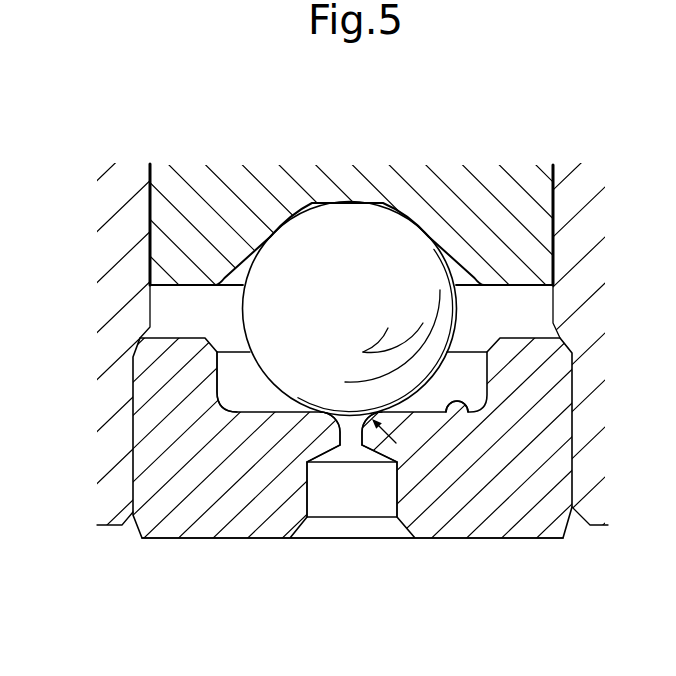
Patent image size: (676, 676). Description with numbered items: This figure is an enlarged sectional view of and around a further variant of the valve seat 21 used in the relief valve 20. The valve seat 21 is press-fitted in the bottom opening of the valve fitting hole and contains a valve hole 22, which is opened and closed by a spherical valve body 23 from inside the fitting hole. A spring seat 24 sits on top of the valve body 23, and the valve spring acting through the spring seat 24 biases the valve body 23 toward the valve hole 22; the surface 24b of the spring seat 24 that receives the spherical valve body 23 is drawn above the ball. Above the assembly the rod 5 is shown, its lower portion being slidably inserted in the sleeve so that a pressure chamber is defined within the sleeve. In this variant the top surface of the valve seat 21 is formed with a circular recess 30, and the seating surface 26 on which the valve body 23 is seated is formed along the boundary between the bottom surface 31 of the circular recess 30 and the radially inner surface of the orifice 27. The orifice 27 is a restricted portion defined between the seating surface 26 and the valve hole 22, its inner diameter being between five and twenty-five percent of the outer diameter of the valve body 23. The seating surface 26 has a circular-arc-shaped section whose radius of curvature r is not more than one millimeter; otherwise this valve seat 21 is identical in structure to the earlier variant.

The rod 5 is at (118, 222).
The relief valve 20 is at (141, 540).
The valve seat 21 is at (144, 452).
The valve hole 22 is at (333, 503).
The spherical valve body 23 is at (387, 237).
The spring seat 24 is at (208, 190).
The spherical seat surface 24b is at (284, 240).
The seating surface 26 is at (330, 411).
The orifice 27 is at (352, 440).
The circular recess 30 is at (216, 384).
The bottom surface 31 is at (470, 414).
The radius of curvature r is at (391, 433).